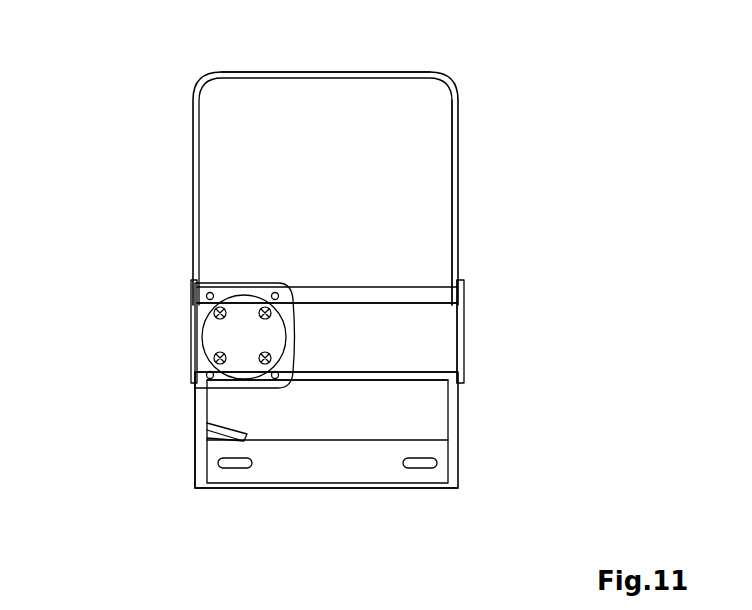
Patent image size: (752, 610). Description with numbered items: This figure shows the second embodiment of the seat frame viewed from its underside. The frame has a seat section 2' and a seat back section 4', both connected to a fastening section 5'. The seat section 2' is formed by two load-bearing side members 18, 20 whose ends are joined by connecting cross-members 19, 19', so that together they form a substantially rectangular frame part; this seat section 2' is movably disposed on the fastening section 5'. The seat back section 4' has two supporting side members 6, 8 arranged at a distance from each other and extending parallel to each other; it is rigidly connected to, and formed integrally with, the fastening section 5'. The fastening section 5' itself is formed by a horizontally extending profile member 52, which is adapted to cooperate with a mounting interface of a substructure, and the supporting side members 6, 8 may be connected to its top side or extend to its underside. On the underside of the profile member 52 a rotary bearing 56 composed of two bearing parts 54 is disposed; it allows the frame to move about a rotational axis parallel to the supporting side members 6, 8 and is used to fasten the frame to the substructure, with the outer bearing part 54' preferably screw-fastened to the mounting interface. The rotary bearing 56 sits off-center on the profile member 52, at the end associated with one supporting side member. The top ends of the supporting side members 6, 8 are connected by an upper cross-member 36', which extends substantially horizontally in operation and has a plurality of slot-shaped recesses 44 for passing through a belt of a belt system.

The seat section 2' is at (521, 144).
The seat back section 4' is at (540, 460).
The fastening section 5' is at (507, 325).
The supporting side member 6 is at (457, 412).
The supporting side member 8 is at (198, 455).
The load-bearing side member 18 is at (200, 175).
The connecting cross-member 19 is at (327, 258).
The connecting cross-member 19' is at (339, 45).
The load-bearing side member 20 is at (457, 210).
The upper cross-member 36' is at (326, 510).
The slot-shaped recess 44 is at (422, 467).
The profile member 52 is at (430, 347).
The bearing part 54 is at (174, 312).
The outer bearing part 54' is at (173, 335).
The rotary bearing 56 is at (205, 392).